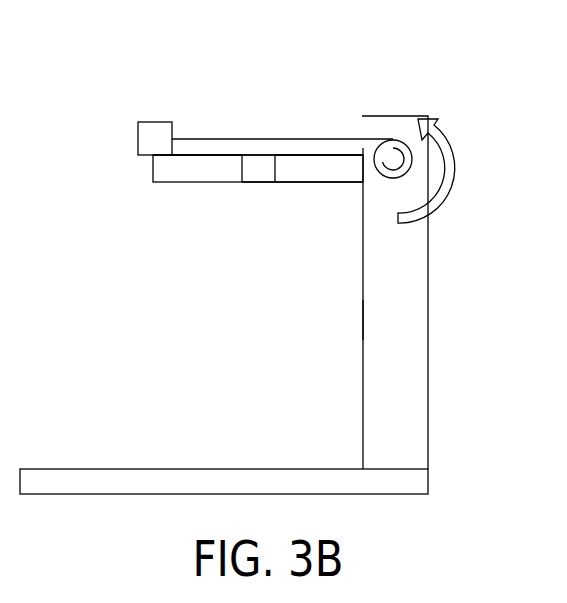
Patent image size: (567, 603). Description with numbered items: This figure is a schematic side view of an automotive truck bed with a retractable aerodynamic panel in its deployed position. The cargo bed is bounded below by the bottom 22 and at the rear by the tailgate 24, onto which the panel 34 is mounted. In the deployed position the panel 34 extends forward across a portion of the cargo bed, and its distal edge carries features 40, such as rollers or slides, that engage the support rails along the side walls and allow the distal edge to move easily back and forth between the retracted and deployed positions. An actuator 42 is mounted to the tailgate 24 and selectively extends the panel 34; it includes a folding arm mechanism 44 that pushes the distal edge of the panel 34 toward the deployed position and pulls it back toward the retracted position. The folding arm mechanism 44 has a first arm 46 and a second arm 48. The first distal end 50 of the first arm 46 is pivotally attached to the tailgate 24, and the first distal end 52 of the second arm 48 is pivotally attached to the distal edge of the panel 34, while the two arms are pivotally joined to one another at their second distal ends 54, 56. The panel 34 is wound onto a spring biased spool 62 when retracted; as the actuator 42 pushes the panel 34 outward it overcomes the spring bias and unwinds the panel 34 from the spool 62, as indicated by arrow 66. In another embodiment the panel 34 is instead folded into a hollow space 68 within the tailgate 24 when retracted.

The bottom 22 is at (139, 482).
The tailgate 24 is at (428, 422).
The panel 34 is at (283, 139).
The features 40 is at (155, 120).
The actuator 42 is at (223, 222).
The folding arm mechanism 44 is at (257, 183).
The first arm 46 is at (305, 170).
The second arm 48 is at (190, 168).
The first distal end of the first arm 50 is at (341, 168).
The first distal end of the second arm 52 is at (152, 168).
The second distal end of the first arm 54 is at (274, 183).
The second distal end of the second arm 56 is at (238, 184).
The spool 62 is at (407, 140).
The arrow 66 is at (454, 187).
The hollow space 68 is at (395, 333).